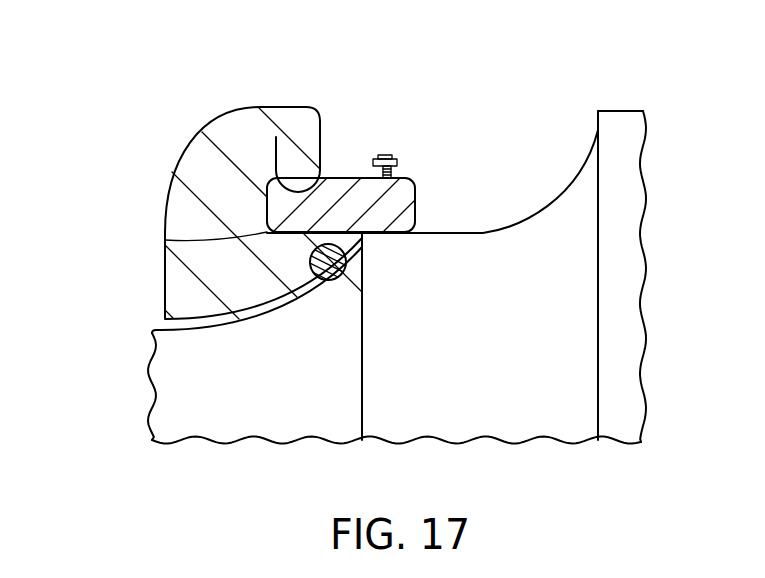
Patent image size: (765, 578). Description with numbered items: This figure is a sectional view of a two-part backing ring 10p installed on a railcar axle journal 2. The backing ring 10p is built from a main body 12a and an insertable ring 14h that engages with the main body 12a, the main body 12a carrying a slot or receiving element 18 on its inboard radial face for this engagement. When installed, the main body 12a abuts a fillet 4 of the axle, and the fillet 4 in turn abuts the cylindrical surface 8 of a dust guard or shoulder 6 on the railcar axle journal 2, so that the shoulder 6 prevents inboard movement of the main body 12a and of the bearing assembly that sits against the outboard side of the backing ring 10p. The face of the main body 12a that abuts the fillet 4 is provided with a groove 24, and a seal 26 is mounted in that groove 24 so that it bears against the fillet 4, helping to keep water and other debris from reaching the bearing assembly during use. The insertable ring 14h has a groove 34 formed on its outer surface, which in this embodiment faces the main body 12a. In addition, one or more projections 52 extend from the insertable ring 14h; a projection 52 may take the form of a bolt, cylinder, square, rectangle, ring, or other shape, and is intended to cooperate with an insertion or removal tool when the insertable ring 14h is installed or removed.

The two-part backing ring 10p is at (110, 71).
The railcar axle journal 2 is at (182, 388).
The fillet 4 is at (263, 320).
The dust guard or shoulder 6 is at (572, 330).
The cylindrical surface 8 is at (458, 232).
The main body 12a is at (208, 153).
The insertable ring 14h is at (329, 190).
The slot or receiving element 18 is at (165, 240).
The groove 24 is at (336, 281).
The seal 26 is at (342, 255).
The groove 34 is at (275, 147).
The projection 52 is at (386, 153).